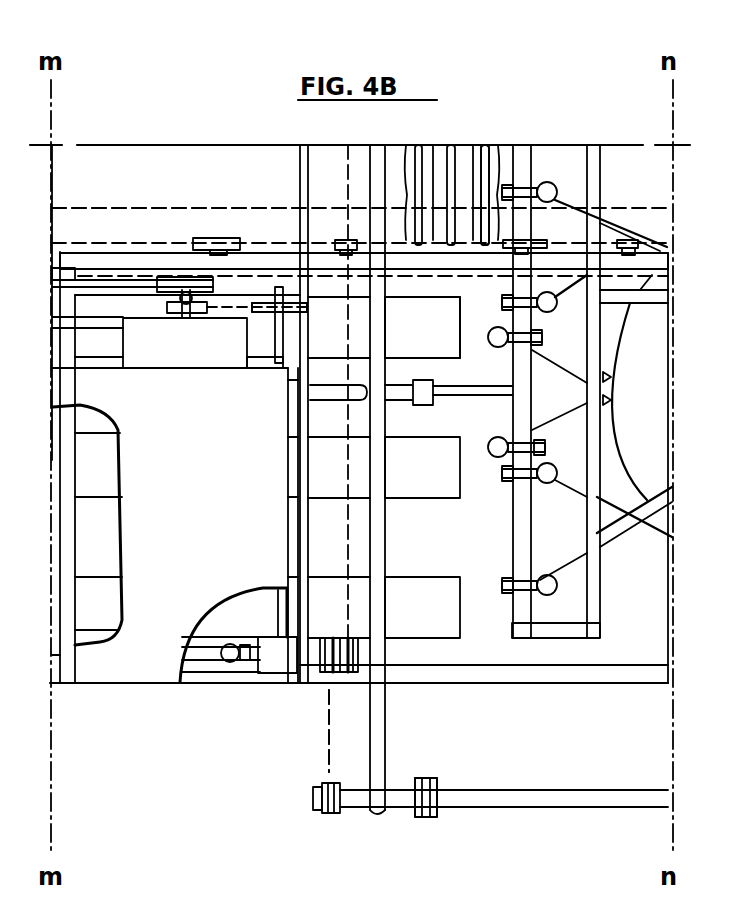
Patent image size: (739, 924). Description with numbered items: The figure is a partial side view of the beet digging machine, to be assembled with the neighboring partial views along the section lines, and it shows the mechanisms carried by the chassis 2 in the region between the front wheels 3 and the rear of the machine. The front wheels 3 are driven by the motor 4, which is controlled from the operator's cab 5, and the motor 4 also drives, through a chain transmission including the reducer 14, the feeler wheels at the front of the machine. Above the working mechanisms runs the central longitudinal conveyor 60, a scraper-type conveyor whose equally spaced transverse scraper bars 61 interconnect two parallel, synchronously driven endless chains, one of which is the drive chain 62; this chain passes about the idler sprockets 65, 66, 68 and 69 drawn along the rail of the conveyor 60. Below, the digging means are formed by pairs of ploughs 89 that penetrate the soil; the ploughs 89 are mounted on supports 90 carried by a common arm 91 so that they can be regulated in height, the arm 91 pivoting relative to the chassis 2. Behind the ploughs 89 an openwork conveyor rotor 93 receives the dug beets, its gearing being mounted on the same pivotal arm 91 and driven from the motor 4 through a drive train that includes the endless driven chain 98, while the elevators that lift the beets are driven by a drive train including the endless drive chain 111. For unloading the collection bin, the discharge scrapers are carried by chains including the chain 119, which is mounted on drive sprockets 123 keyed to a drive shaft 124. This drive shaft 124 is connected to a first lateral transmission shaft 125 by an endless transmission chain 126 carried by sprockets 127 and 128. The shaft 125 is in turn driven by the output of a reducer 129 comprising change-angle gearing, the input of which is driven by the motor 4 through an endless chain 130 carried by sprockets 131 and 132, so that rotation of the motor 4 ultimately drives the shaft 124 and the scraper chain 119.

The chassis 2 is at (543, 690).
The front wheels 3 is at (425, 498).
The motor 4 is at (148, 357).
The operator's cab 5 is at (207, 472).
The reducer 14 is at (97, 278).
The central longitudinal conveyor 60 is at (97, 242).
The transverse scraper bars 61 is at (460, 153).
The endless drive chain 62 is at (437, 150).
The idler sprocket 65 is at (207, 238).
The idler sprocket 66 is at (535, 243).
The idler sprocket 68 is at (627, 240).
The idler sprocket 69 is at (347, 241).
The ploughs 89 is at (570, 295).
The supports 90 is at (548, 590).
The common arm 91 is at (518, 540).
The openwork conveyor rotor 93 is at (623, 470).
The endless driven chain 98 is at (85, 207).
The endless drive chain 111 is at (417, 275).
The endless chain 119 is at (425, 780).
The drive sprockets 123 is at (413, 815).
The drive shaft 124 is at (553, 810).
The first lateral transmission shaft 125 is at (313, 687).
The endless transmission chain 126 is at (342, 746).
The sprocket 127 is at (323, 813).
The sprocket 128 is at (325, 638).
The reducer 129 is at (277, 665).
The endless chain 130 is at (225, 312).
The sprocket 131 is at (175, 318).
The sprocket 132 is at (300, 318).